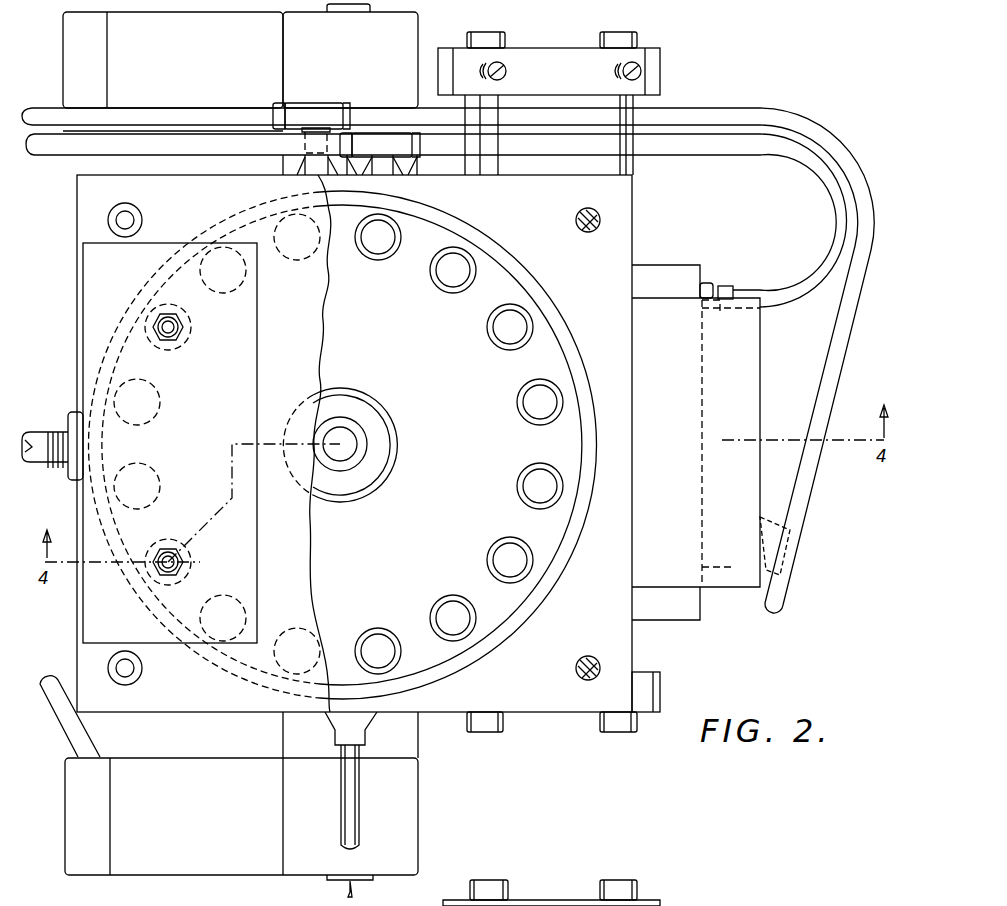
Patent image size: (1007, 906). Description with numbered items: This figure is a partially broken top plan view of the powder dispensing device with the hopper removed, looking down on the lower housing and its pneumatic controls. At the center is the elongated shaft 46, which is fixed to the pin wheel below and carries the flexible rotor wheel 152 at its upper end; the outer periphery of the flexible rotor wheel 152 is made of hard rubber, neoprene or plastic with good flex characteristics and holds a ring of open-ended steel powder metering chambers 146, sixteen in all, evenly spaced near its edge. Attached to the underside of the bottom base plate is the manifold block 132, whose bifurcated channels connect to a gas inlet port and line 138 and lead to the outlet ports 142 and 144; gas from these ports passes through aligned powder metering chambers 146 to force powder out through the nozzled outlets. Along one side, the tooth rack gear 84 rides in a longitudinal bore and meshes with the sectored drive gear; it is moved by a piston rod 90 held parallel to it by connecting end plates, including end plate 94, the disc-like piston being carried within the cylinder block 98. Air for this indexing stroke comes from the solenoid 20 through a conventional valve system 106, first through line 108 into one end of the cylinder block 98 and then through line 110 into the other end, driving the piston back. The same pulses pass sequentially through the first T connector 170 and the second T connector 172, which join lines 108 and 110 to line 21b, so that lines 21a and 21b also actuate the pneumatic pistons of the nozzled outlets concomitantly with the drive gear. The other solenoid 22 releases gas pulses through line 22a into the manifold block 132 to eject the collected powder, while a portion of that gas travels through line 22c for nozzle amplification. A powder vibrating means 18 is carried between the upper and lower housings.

The powder vibrating means 18 is at (748, 386).
The solenoid 20 is at (204, 59).
The line 21a is at (151, 148).
The line 21b is at (148, 118).
The solenoid 22 is at (183, 864).
The line 22a is at (78, 738).
The line 22c is at (348, 820).
The elongated shaft 46 is at (348, 450).
The tooth rack gear 84 is at (497, 46).
The piston rod 90 is at (628, 40).
The connecting end plate 94 is at (545, 905).
The cylinder block 98 is at (748, 342).
The valve system 106 is at (362, 31).
The line 108 is at (706, 118).
The line 110 is at (698, 144).
The manifold block 132 is at (240, 333).
The gas inlet port and line 138 is at (40, 430).
The outlet port 142 is at (173, 331).
The outlet port 144 is at (185, 562).
The powder metering chamber 146 is at (520, 488).
The flexible rotor wheel 152 is at (543, 522).
The T connector 170 is at (313, 116).
The T connector 172 is at (405, 173).